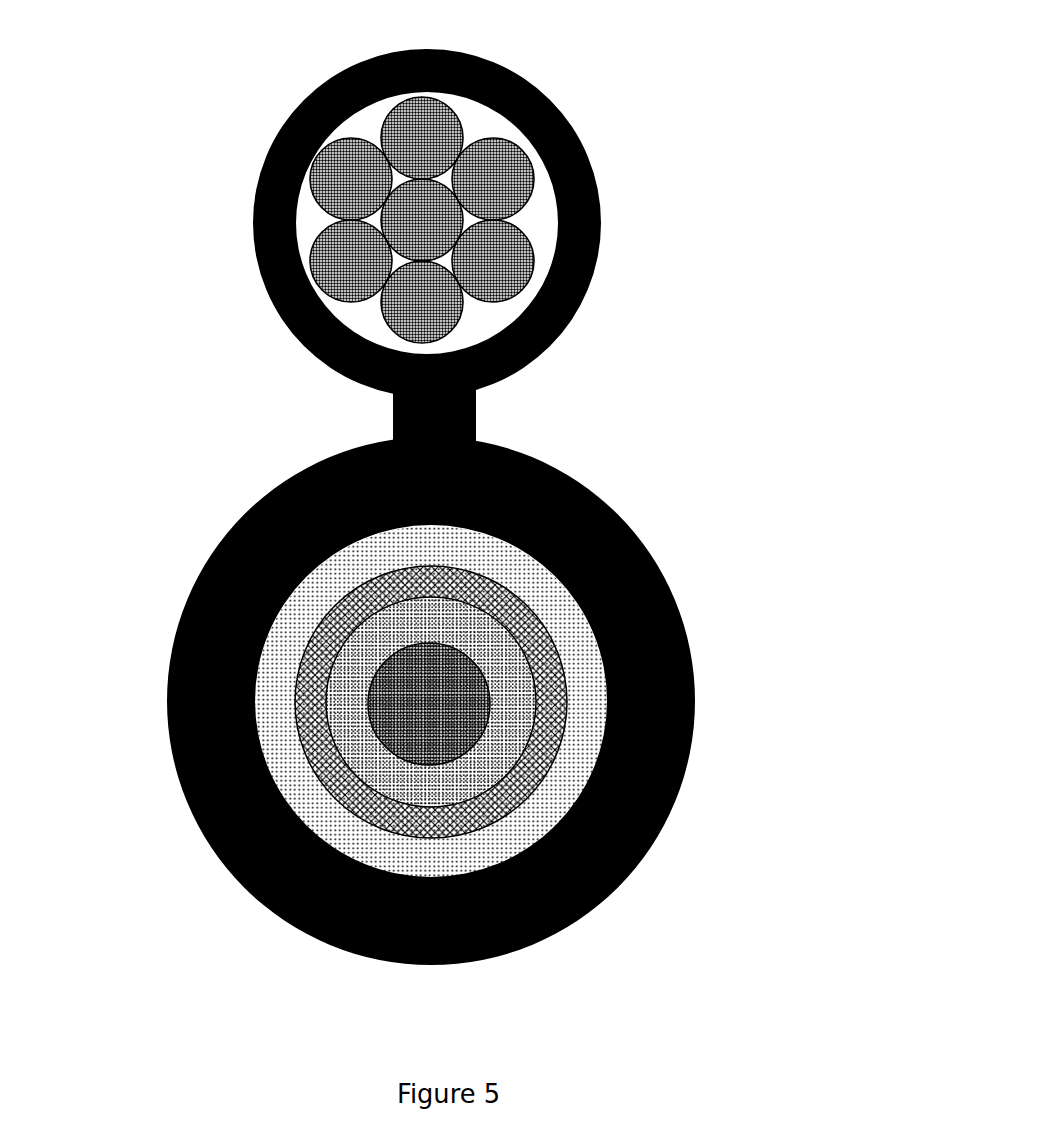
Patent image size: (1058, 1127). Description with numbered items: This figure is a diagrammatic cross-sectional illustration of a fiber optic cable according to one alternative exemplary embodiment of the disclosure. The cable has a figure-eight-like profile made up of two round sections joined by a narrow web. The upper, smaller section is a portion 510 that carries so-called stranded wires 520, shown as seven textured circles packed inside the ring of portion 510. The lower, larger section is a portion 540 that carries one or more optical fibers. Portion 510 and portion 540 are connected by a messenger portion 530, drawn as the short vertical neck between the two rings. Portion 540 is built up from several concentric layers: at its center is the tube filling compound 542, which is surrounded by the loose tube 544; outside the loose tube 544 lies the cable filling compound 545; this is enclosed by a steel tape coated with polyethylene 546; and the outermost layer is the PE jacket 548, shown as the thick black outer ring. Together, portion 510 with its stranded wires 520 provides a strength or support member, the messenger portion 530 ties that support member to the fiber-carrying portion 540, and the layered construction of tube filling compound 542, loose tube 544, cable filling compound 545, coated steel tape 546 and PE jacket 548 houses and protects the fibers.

The portion 510 is at (551, 223).
The stranded wires 520 is at (509, 177).
The messenger portion 530 is at (535, 410).
The portion 540 is at (472, 679).
The tube filling compound 542 is at (571, 579).
The loose tube 544 is at (576, 642).
The cable filling compound 545 is at (591, 695).
The steel tape coated with polyethylene 546 is at (573, 702).
The PE jacket 548 is at (510, 701).